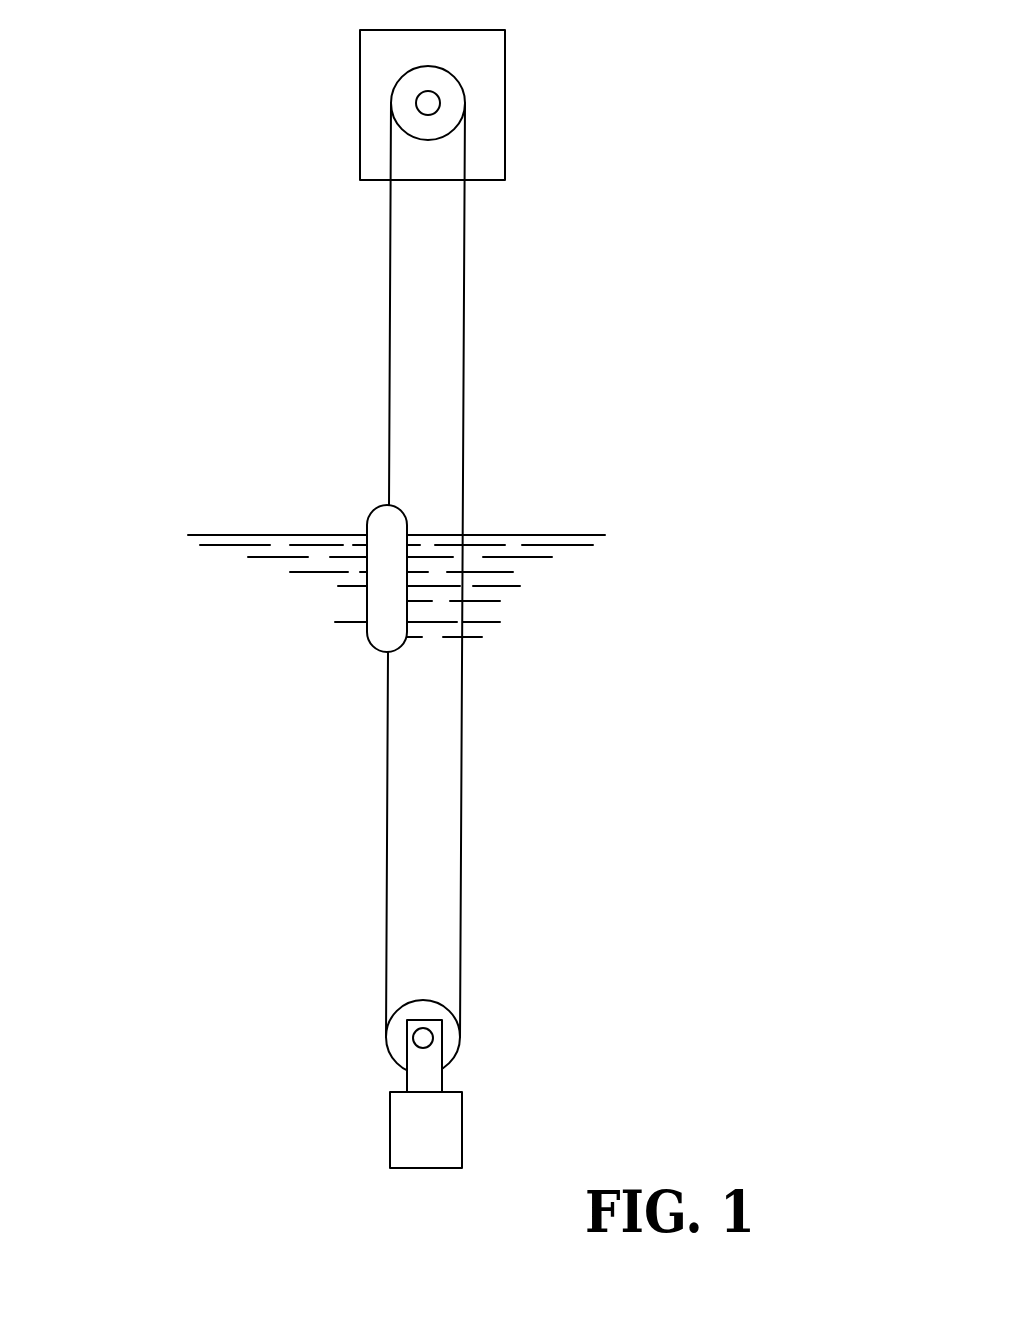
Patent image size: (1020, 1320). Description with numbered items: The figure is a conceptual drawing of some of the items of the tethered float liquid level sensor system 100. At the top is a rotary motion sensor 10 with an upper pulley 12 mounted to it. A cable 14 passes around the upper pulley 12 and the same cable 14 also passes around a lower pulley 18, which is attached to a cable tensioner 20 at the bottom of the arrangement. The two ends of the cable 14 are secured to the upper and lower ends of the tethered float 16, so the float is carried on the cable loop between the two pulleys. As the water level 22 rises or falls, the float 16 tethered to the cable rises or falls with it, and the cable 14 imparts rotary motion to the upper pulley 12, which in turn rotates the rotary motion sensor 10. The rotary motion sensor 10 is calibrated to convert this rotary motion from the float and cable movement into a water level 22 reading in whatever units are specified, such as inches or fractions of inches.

The tethered float liquid level sensor system 100 is at (205, 142).
The rotary motion sensor 10 is at (505, 83).
The upper pulley 12 is at (450, 112).
The cable 14 is at (463, 298).
The tethered float 16 is at (375, 508).
The lower pulley 18 is at (450, 1040).
The cable tensioner 20 is at (448, 1135).
The water level 22 is at (530, 535).